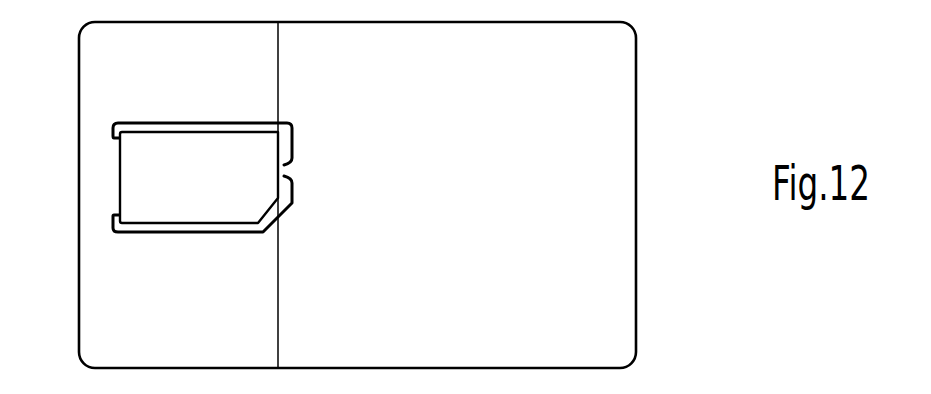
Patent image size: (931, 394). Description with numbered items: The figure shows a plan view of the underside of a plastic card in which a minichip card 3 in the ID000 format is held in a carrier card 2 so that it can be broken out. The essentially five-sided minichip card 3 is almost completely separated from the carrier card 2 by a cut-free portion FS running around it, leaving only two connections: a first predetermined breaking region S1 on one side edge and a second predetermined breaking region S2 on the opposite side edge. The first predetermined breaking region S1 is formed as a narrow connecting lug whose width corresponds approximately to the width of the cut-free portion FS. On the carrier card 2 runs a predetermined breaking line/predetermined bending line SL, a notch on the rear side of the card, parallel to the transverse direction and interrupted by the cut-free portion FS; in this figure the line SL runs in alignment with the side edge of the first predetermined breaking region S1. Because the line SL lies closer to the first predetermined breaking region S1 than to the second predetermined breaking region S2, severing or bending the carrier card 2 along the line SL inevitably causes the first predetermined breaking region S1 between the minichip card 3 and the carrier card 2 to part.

The carrier card 2 is at (463, 225).
The minichip card 3 is at (203, 198).
The predetermined breaking line/predetermined bending line SL is at (279, 60).
The first predetermined breaking region S1 is at (282, 168).
The second predetermined breaking region S2 is at (120, 170).
The cut-free portion FS is at (197, 235).